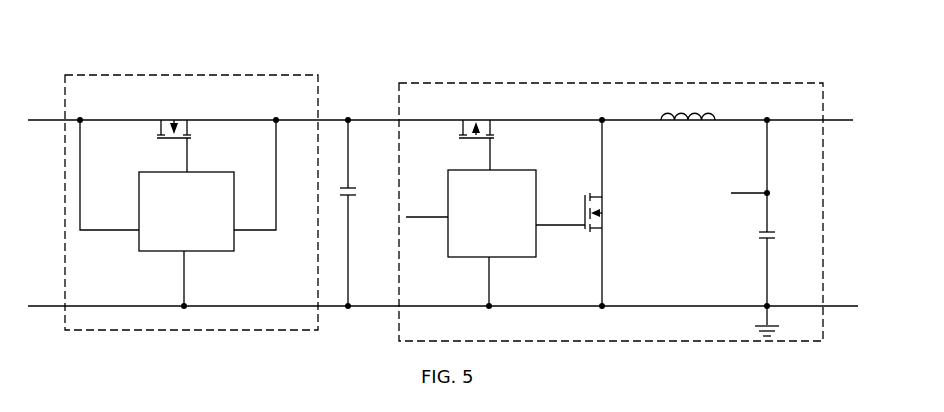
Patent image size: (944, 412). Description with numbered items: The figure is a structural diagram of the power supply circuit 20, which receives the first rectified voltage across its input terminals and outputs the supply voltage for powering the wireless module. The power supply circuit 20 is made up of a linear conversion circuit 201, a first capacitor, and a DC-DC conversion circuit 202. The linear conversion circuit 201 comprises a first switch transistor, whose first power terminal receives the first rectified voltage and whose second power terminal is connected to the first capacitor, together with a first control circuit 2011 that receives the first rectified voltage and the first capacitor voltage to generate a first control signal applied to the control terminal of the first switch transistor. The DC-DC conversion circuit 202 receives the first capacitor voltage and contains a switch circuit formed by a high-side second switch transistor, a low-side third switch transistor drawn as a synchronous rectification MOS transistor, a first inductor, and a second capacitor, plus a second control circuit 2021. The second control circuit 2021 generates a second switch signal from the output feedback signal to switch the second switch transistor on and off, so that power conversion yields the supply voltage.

The power supply circuit 20 is at (770, 32).
The linear conversion circuit 201 is at (198, 75).
The DC-DC conversion circuit 202 is at (507, 83).
The first control circuit 2011 is at (170, 243).
The second control circuit 2021 is at (492, 214).